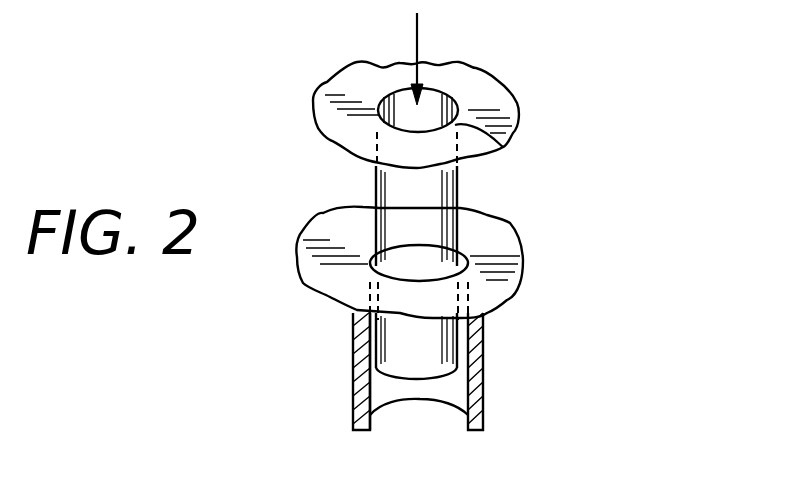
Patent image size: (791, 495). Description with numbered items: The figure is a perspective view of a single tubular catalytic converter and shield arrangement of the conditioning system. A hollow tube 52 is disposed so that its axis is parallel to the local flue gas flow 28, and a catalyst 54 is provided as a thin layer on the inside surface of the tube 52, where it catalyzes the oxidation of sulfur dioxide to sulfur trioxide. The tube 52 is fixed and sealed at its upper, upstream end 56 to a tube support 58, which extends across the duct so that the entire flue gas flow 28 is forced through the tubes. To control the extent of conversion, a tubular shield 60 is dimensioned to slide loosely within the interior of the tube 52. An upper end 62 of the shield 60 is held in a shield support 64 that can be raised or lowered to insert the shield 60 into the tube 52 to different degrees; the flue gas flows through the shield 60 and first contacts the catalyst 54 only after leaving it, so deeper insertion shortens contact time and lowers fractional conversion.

The flue gas flow 28 is at (417, 35).
The hollow tube 52 is at (483, 413).
The catalyst 54 is at (373, 398).
The upper end 56 is at (357, 331).
The tube support 58 is at (510, 248).
The tubular shield 60 is at (460, 192).
The upper end of the shield 62 is at (503, 147).
The shield support 64 is at (503, 93).